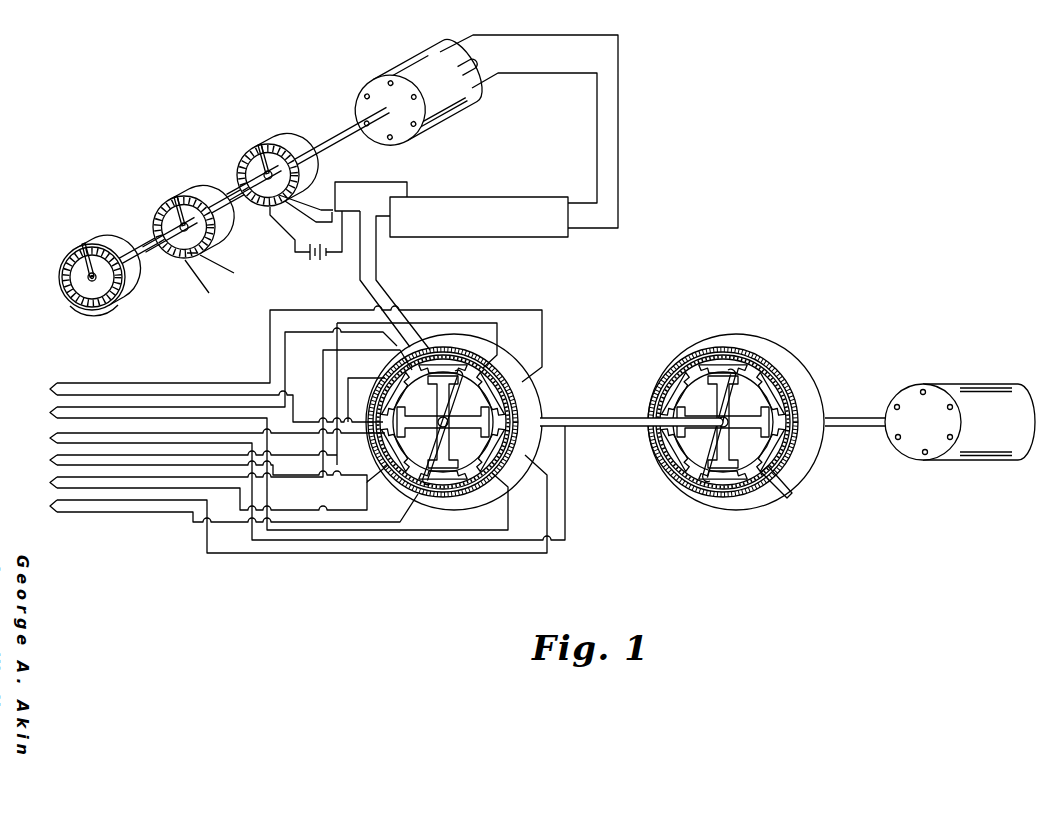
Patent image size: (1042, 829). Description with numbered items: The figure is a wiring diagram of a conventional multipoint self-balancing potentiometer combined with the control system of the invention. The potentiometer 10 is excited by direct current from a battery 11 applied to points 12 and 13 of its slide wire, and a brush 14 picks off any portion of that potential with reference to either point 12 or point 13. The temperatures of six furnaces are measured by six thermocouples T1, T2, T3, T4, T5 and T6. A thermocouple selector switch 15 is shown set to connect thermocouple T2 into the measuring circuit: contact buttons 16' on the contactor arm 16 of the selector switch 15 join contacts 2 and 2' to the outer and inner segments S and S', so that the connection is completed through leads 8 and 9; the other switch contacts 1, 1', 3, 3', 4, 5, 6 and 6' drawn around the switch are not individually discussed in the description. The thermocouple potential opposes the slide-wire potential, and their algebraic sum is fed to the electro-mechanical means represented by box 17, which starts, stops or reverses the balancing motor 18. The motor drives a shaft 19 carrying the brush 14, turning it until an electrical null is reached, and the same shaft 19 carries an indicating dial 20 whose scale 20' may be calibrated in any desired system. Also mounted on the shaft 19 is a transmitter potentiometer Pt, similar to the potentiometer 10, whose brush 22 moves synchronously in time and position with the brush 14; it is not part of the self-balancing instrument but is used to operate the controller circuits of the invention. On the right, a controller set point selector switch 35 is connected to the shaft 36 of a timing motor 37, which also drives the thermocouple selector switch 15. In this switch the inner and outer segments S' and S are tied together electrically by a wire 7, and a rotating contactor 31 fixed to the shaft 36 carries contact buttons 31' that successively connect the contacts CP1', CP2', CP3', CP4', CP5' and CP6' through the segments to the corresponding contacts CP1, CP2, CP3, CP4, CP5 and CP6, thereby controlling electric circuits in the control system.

The pole piece 1 is at (521, 451).
The pole piece 1' is at (383, 370).
The contact 2 is at (445, 511).
The contact 2' is at (439, 328).
The pole piece 3 is at (362, 456).
The pole piece 3' is at (510, 309).
The pole piece 4 is at (518, 437).
The pole piece 5 is at (458, 347).
The pole piece 6 is at (511, 350).
The pole piece 6' is at (364, 482).
The wire 7 is at (788, 500).
The lead 8 is at (377, 268).
The lead 9 is at (360, 272).
The potentiometer 10 is at (268, 146).
The battery 11 is at (308, 256).
The point 12 is at (313, 180).
The point 13 is at (265, 212).
The brush 14 is at (253, 153).
The thermocouple selector switch 15 is at (505, 472).
The contactor arm 16 is at (439, 437).
The contact buttons 16' is at (460, 421).
The box 17 is at (497, 200).
The balancing motor 18 is at (447, 121).
The shaft 19 is at (323, 146).
The indicating dial 20 is at (99, 243).
The scale 20' is at (118, 318).
The brush 22 is at (159, 210).
The rotating contactor 31 is at (725, 425).
The contact buttons 31' is at (719, 452).
The controller set point selector switch 35 is at (678, 473).
The shaft 36 is at (586, 417).
The timing motor 37 is at (973, 383).
The transmitter potentiometer Pt is at (205, 196).
The outer segment S is at (673, 379).
The inner segment S' is at (681, 401).
The thermocouple T1 is at (49, 503).
The thermocouple T2 is at (49, 480).
The thermocouple T3 is at (49, 458).
The thermocouple T4 is at (49, 436).
The thermocouple T5 is at (49, 410).
The thermocouple T6 is at (49, 386).
The contact CP1 is at (739, 339).
The contact CP2 is at (773, 343).
The contact CP3 is at (837, 452).
The contact CP4 is at (694, 521).
The contact CP5 is at (621, 447).
The contact CP6 is at (685, 351).
The contact CP1' is at (759, 523).
The contact CP2' is at (617, 476).
The contact CP3' is at (662, 339).
The contact CP4' is at (735, 318).
The contact CP5' is at (814, 343).
The contact CP6' is at (827, 484).